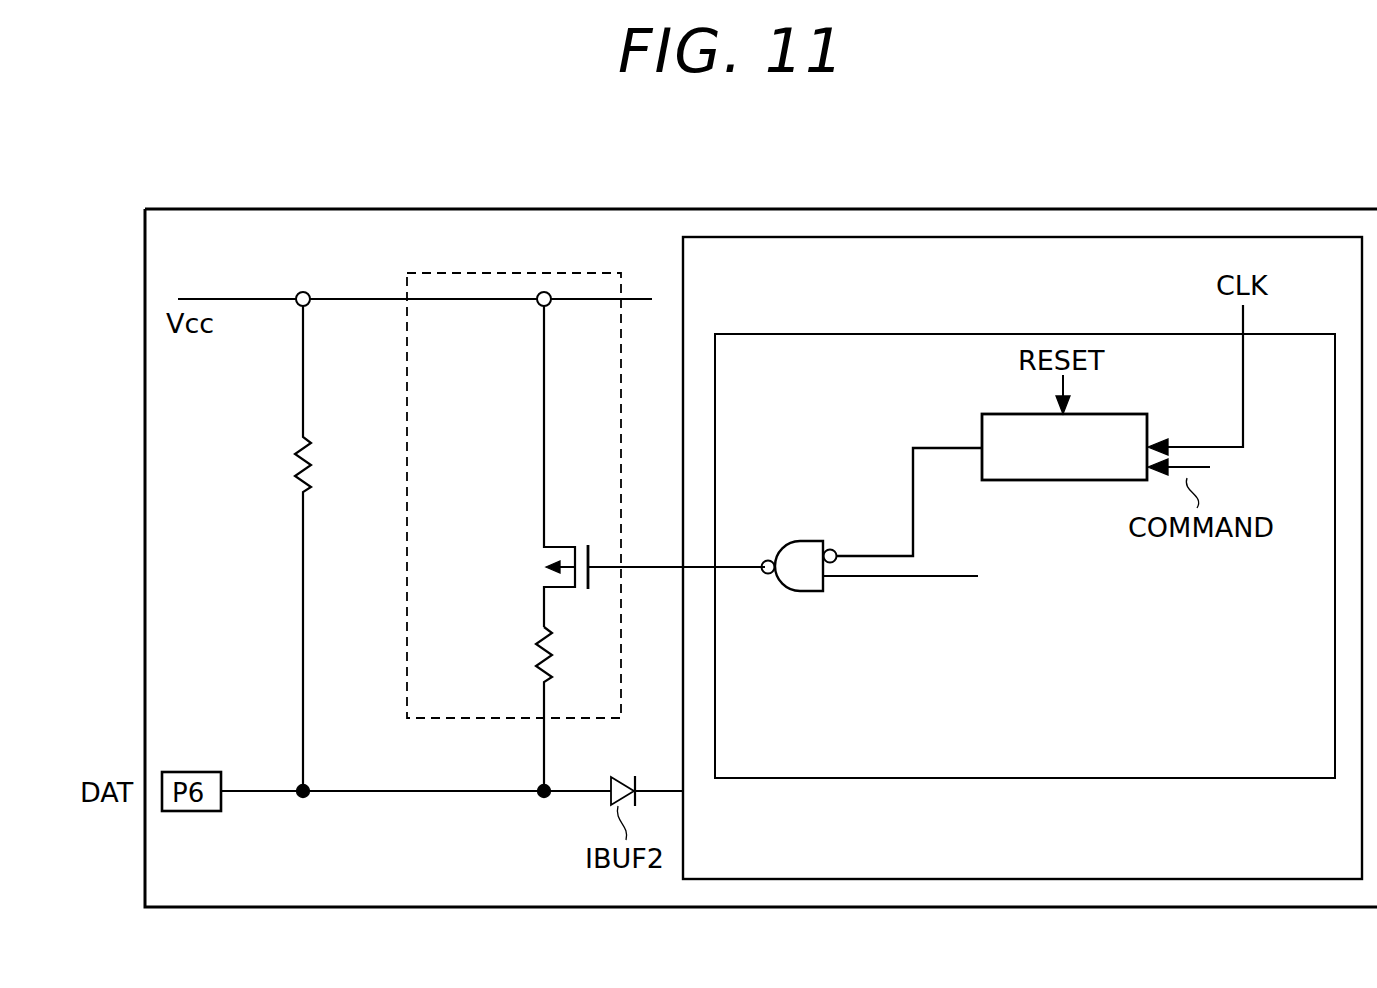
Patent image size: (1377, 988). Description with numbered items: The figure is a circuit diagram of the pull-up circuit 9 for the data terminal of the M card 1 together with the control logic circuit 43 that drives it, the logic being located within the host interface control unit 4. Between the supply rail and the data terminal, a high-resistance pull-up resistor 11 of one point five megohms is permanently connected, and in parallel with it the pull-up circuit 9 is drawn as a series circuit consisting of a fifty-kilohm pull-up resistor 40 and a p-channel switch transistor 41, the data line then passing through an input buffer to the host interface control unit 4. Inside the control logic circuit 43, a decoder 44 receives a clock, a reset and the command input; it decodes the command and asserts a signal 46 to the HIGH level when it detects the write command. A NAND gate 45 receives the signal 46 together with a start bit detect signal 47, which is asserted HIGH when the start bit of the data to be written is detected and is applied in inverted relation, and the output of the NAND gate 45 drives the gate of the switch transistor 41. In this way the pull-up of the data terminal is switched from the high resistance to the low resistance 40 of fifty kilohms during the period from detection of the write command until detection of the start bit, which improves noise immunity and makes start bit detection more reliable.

The M card 1 is at (1007, 208).
The host interface control unit 4 is at (682, 282).
The pull-up circuit 9 is at (405, 285).
The pull-up resistor (1.5 MΩ) 11 is at (298, 445).
The pull-up resistor 40 is at (538, 682).
The p-channel switch transistor 41 is at (535, 548).
The control logic circuit 43 is at (840, 780).
The decoder 44 is at (1017, 483).
The NAND gate 45 is at (800, 540).
The signal 46 is at (912, 473).
The start bit detect signal 47 is at (870, 578).